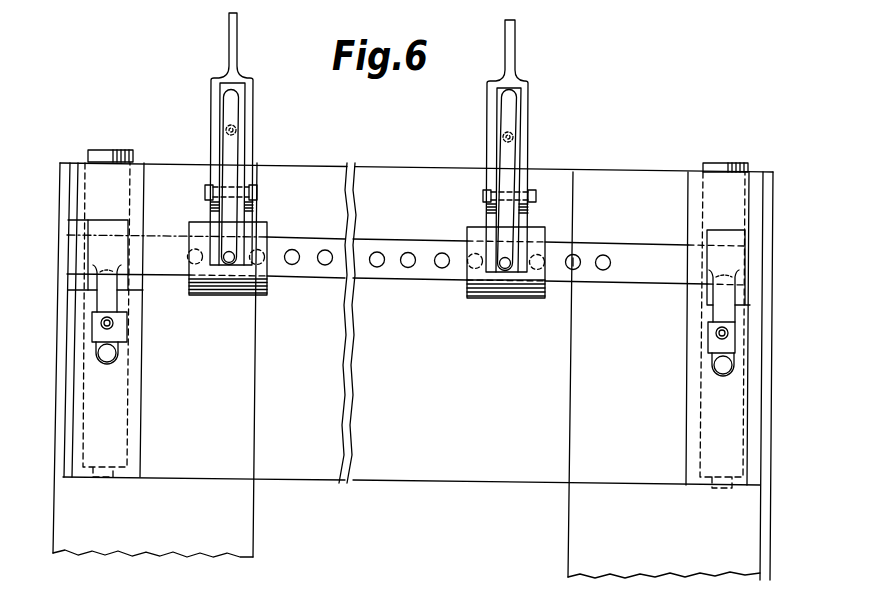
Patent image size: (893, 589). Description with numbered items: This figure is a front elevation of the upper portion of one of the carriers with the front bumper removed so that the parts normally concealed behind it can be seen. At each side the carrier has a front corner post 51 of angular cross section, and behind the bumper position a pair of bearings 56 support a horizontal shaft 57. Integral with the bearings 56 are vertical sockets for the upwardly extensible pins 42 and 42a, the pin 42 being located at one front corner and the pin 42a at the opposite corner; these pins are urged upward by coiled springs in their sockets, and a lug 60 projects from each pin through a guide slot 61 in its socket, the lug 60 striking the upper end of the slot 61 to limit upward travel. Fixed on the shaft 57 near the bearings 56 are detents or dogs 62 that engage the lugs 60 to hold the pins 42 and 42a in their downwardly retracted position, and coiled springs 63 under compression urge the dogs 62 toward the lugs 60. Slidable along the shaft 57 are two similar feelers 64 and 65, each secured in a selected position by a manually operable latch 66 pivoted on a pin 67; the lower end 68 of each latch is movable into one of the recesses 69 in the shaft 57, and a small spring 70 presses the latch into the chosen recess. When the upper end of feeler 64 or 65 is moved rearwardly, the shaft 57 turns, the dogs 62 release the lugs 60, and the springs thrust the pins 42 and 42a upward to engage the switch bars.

The pin 42 is at (747, 163).
The pin 42a is at (133, 154).
The front corner post 51 is at (406, 550).
The bearing 56 is at (72, 410).
The horizontal shaft 57 is at (648, 273).
The lug 60 is at (115, 357).
The guide slot 61 is at (110, 370).
The detent or dog 62 is at (127, 338).
The coiled spring 63 is at (115, 315).
The feeler 64 is at (513, 52).
The feeler 65 is at (229, 52).
The manually operable latch 66 is at (228, 218).
The pin 67 is at (237, 193).
The lower end of latch 68 is at (505, 268).
The recess 69 is at (410, 280).
The small spring 70 is at (229, 121).